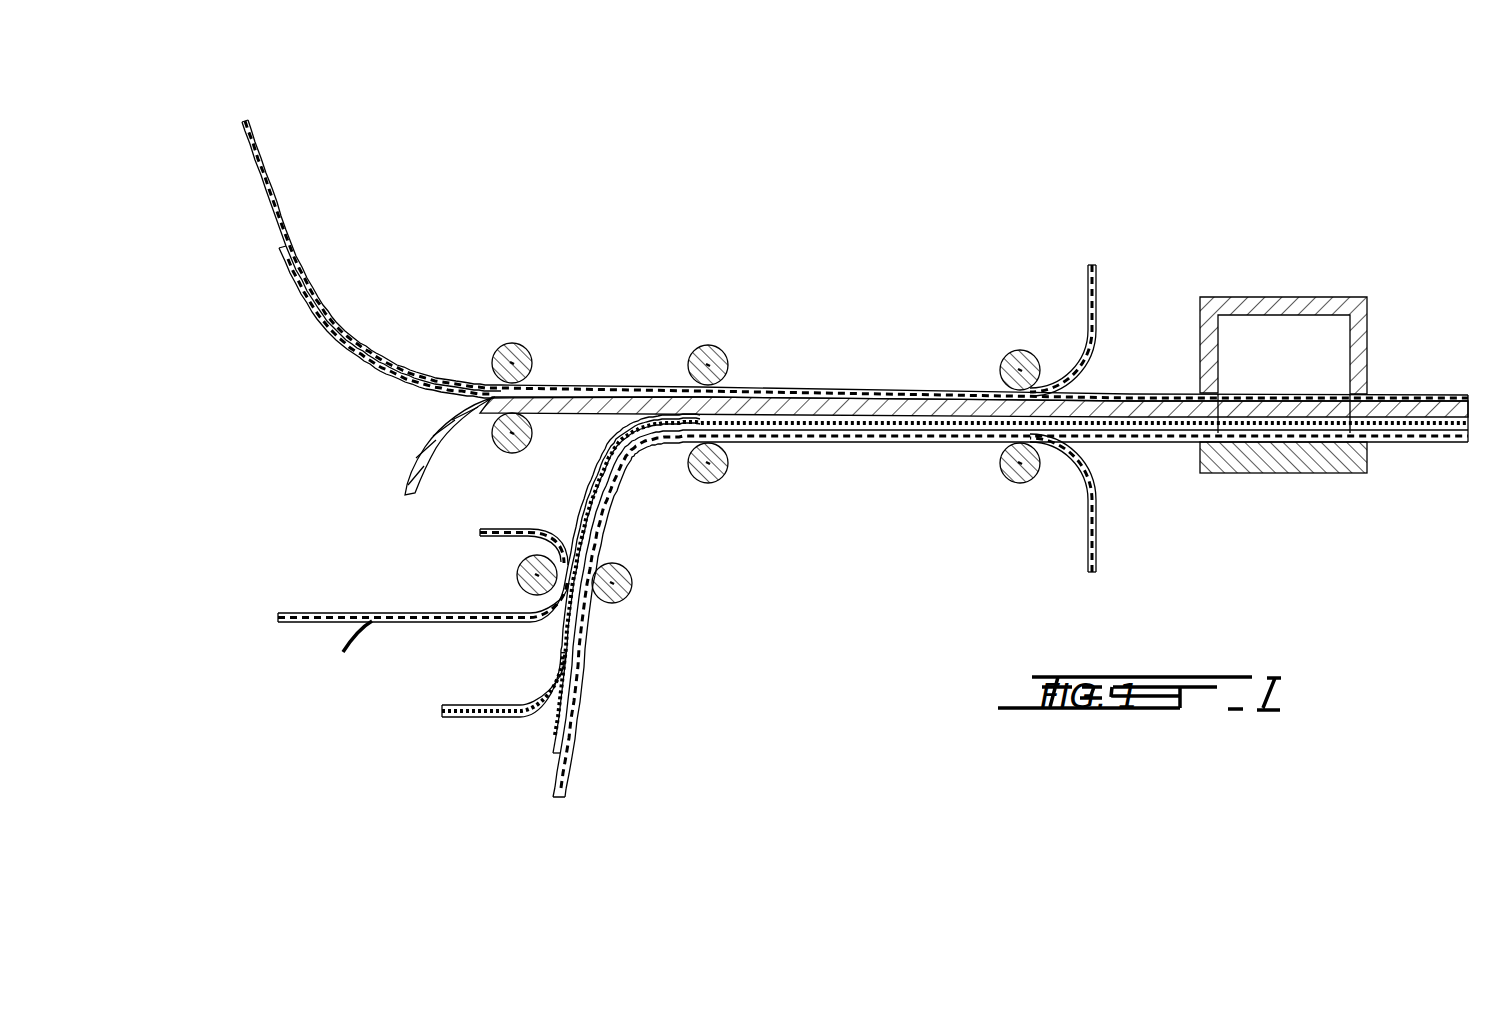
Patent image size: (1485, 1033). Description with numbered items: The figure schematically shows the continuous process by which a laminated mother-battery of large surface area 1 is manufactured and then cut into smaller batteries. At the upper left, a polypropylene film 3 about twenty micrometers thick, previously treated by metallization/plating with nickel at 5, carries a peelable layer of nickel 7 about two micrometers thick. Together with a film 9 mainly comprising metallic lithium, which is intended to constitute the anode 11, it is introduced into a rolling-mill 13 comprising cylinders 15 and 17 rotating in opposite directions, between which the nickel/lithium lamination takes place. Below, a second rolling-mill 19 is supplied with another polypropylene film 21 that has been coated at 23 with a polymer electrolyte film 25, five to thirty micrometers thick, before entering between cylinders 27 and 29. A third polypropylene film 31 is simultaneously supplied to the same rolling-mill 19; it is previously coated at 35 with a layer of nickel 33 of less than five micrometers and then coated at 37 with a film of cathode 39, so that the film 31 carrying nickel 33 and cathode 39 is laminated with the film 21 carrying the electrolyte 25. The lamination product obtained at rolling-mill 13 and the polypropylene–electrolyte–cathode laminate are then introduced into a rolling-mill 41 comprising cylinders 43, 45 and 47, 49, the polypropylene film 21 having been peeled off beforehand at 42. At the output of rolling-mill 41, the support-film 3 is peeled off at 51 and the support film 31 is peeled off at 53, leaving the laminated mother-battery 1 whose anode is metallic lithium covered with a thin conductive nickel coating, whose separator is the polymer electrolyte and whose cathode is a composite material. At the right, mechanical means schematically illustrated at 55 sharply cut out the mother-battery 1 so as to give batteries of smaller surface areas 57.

The laminated battery of large surface area 1 is at (1112, 430).
The polypropylene film 3 is at (266, 186).
The metallization/plating with nickel 5 is at (328, 299).
The peelable layer of nickel 7 is at (312, 300).
The film of lithium 9 is at (417, 457).
The anode 11 is at (1140, 412).
The rolling-mill 13 is at (520, 367).
The cylinder 15 is at (522, 356).
The cylinder 17 is at (532, 437).
The second rolling-mill 19 is at (577, 595).
The polypropylene film 21 is at (330, 612).
The coating station for electrolyte 23 is at (461, 567).
The polymer electrolyte film 25 is at (355, 643).
The cylinder 27 is at (518, 576).
The cylinder 29 is at (626, 600).
The third polypropylene film 31 is at (568, 799).
The layer of nickel 33 is at (551, 748).
The nickel coating station 35 is at (550, 769).
The cathode coating station 37 is at (555, 597).
The film of cathode 39 is at (503, 705).
The rolling-mill 41 is at (800, 394).
The peeling-off point of polypropylene film 42 is at (561, 528).
The cylinder 43 is at (716, 358).
The cylinder 45 is at (719, 468).
The cylinder 47 is at (1020, 360).
The cylinder 49 is at (1005, 474).
The peeling-off point of support-film 51 is at (1017, 304).
The peeling-off point of support film 53 is at (1004, 529).
The mechanical cutting means 55 is at (1284, 283).
The batteries of smaller surface areas 57 is at (1284, 460).